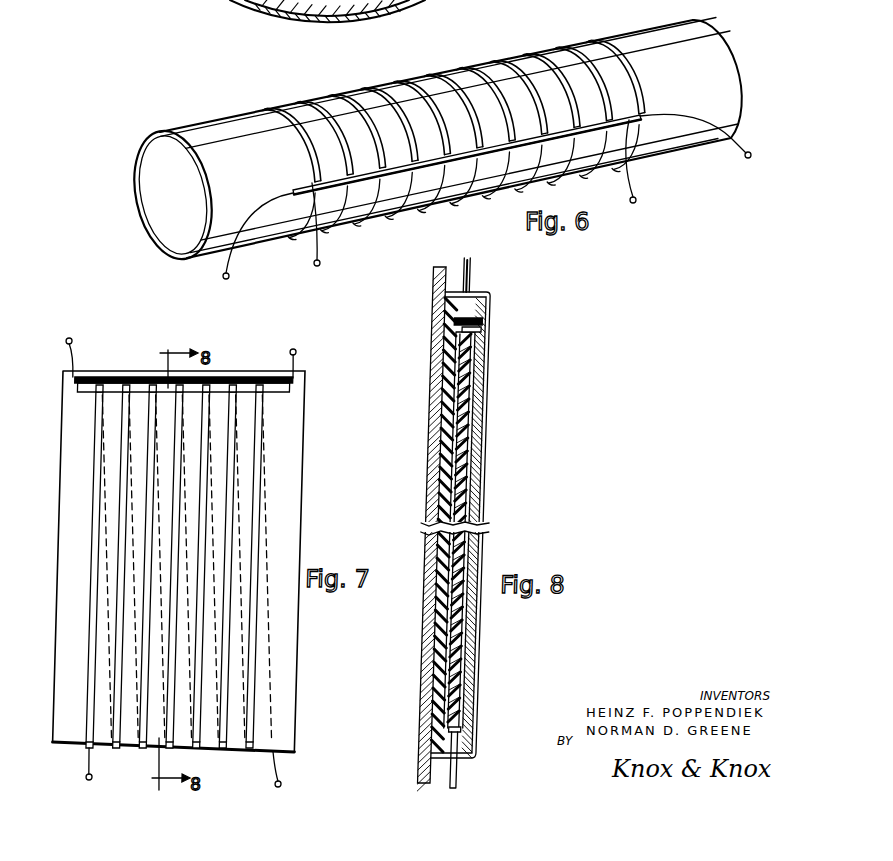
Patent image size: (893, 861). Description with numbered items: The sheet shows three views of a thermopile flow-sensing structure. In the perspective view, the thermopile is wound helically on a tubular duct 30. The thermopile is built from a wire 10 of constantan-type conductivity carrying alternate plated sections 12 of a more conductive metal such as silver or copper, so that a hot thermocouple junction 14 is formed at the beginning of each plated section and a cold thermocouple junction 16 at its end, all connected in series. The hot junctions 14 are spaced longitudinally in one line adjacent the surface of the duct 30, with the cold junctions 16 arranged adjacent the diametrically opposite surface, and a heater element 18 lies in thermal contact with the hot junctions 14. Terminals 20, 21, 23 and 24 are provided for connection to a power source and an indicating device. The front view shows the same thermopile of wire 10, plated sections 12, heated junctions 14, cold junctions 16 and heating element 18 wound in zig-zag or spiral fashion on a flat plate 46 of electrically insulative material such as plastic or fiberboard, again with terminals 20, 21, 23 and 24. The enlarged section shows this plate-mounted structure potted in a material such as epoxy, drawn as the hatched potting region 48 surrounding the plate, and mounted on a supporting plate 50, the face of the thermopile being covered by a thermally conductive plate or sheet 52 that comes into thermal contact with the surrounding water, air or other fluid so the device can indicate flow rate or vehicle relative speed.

In FIG. 6, the wire 10 is at (419, 212).
In FIG. 7, the wire 10 is at (273, 541).
In FIG. 8, the wire 10 is at (452, 448).
In FIG. 6, the plated sections 12 is at (283, 132).
In FIG. 7, the plated sections 12 is at (96, 578).
In FIG. 8, the plated sections 12 is at (479, 423).
In FIG. 6, the thermocouple junctions 14 is at (343, 172).
In FIG. 7, the thermocouple junctions 14 is at (237, 385).
In FIG. 8, the thermocouple junctions 14 is at (474, 338).
In FIG. 7, the thermocouple junctions 16 is at (264, 750).
In FIG. 8, the thermocouple junctions 16 is at (473, 730).
In FIG. 6, the heater element 18 is at (430, 157).
In FIG. 7, the heater element 18 is at (140, 377).
In FIG. 8, the heater element 18 is at (481, 322).
In FIG. 6, the terminal 20 is at (223, 278).
In FIG. 7, the terminal 20 is at (68, 338).
In FIG. 6, the terminal 21 is at (751, 157).
In FIG. 7, the terminal 21 is at (294, 349).
In FIG. 6, the terminal 23 is at (313, 264).
In FIG. 7, the terminal 23 is at (293, 784).
In FIG. 6, the terminal 24 is at (637, 200).
In FIG. 7, the terminal 24 is at (97, 777).
In FIG. 6, the tubular duct 30 is at (210, 123).
In FIG. 7, the flat plate 46 is at (290, 452).
In FIG. 8, the flat plate 46 is at (468, 482).
In FIG. 8, the insulation 48 is at (450, 387).
In FIG. 8, the supporting plate 50 is at (436, 498).
In FIG. 8, the thermally conductive plate or sheet 52 is at (493, 503).